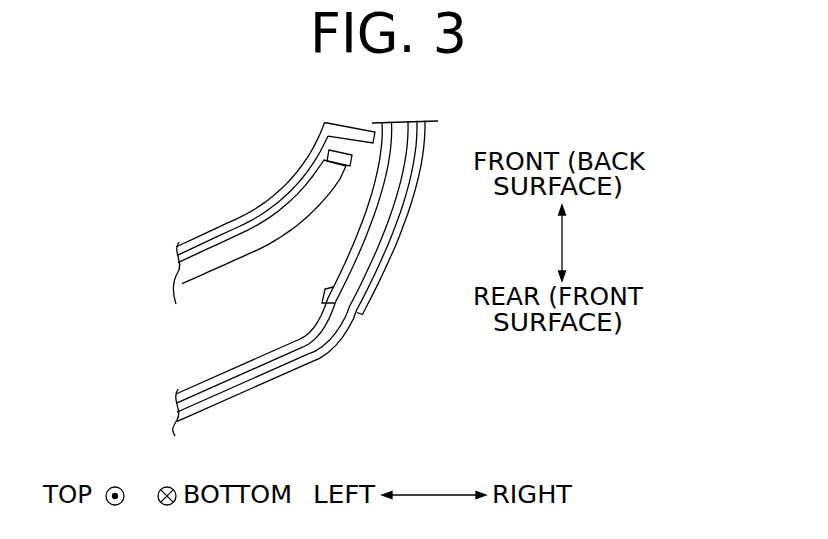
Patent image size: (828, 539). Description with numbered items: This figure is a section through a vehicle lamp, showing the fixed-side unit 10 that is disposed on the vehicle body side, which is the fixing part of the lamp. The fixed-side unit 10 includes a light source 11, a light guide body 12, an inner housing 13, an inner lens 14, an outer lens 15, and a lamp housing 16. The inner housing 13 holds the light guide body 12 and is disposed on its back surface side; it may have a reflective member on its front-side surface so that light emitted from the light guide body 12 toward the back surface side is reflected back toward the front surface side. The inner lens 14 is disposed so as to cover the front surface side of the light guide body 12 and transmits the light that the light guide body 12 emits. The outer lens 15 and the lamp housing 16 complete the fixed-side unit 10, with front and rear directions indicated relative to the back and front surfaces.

The pillar garnish 10 is at (311, 278).
The engagement protrusion 11 is at (343, 153).
The first garnish member 12 is at (282, 227).
The end flange portion 13 is at (332, 130).
The lower base layer 14 is at (265, 367).
The lower surface layer 15 is at (307, 363).
The surface skin layer 16 is at (397, 227).